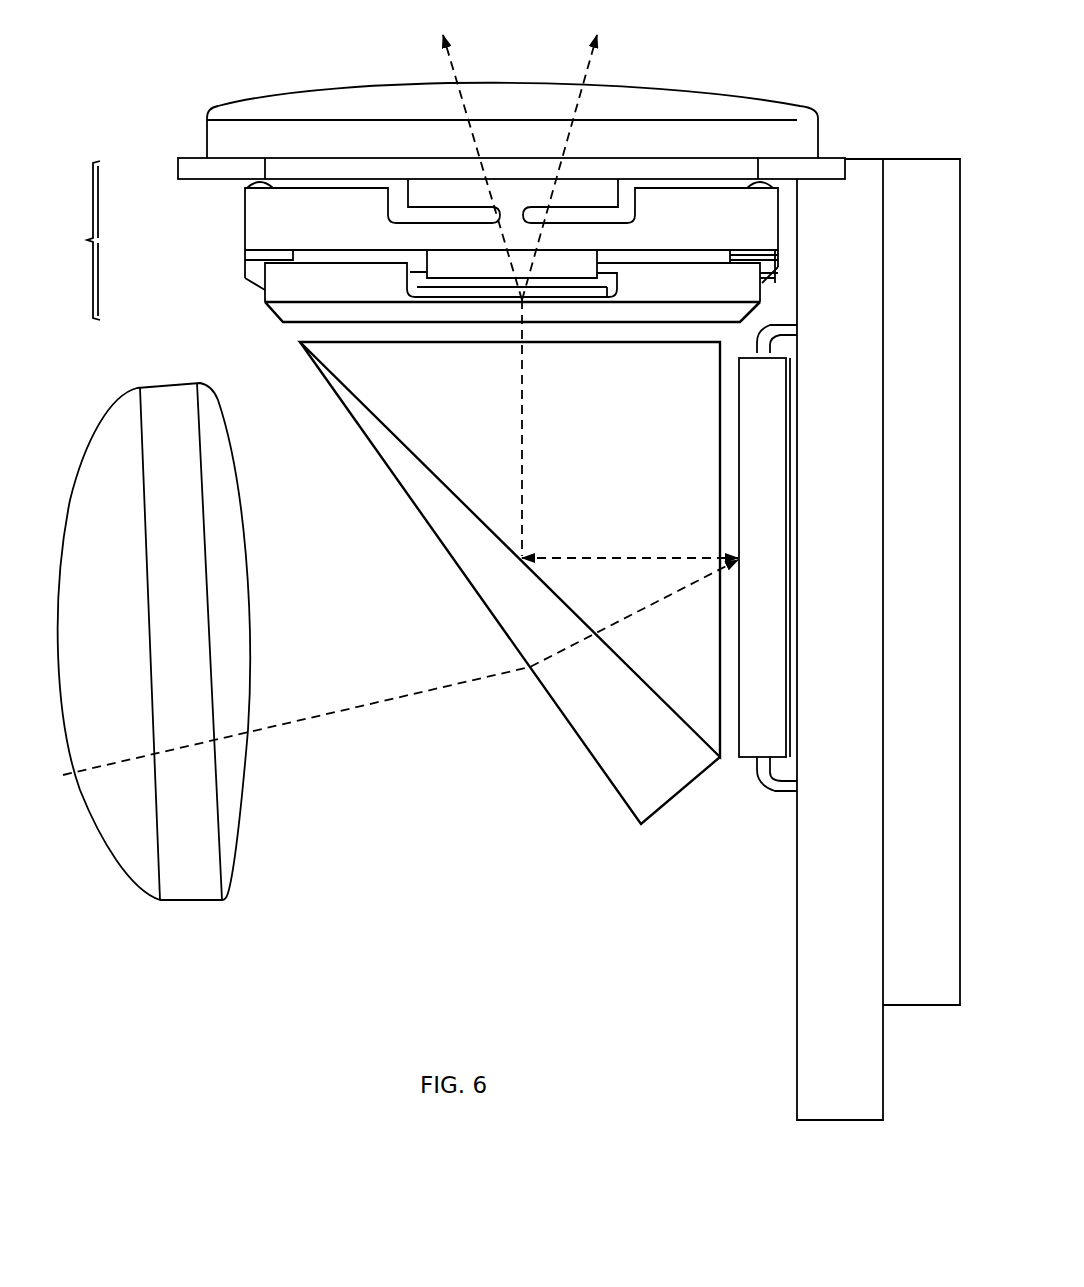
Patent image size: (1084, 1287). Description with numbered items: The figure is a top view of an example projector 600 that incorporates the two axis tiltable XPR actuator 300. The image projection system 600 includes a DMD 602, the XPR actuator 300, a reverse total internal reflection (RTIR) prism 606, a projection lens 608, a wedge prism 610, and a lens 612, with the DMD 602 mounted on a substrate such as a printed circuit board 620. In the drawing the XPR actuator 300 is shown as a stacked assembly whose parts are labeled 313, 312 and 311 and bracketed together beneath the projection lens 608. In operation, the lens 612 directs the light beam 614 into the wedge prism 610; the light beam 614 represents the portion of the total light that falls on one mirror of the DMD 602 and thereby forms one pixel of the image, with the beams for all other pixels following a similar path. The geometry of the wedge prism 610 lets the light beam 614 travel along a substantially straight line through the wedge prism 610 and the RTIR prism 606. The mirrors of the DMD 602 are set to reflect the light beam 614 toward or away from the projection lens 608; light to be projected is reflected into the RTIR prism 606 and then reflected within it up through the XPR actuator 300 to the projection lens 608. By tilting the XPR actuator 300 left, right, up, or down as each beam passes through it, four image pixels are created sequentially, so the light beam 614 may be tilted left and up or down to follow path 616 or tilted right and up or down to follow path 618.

The projector 600 is at (272, 56).
The projection lens 608 is at (380, 85).
The XPR actuator 300 is at (445, 233).
The substrate plate 313 is at (178, 168).
The upper housing 312 is at (250, 218).
The lower housing 311 is at (263, 284).
The reverse total internal reflection (RTIR) prism 606 is at (314, 370).
The wedge prism 610 is at (683, 782).
The DMD 602 is at (786, 558).
The printed circuit board 620 is at (840, 1122).
The lens 612 is at (157, 385).
The light beam 614 is at (398, 693).
The path 616 is at (453, 62).
The path 618 is at (590, 66).